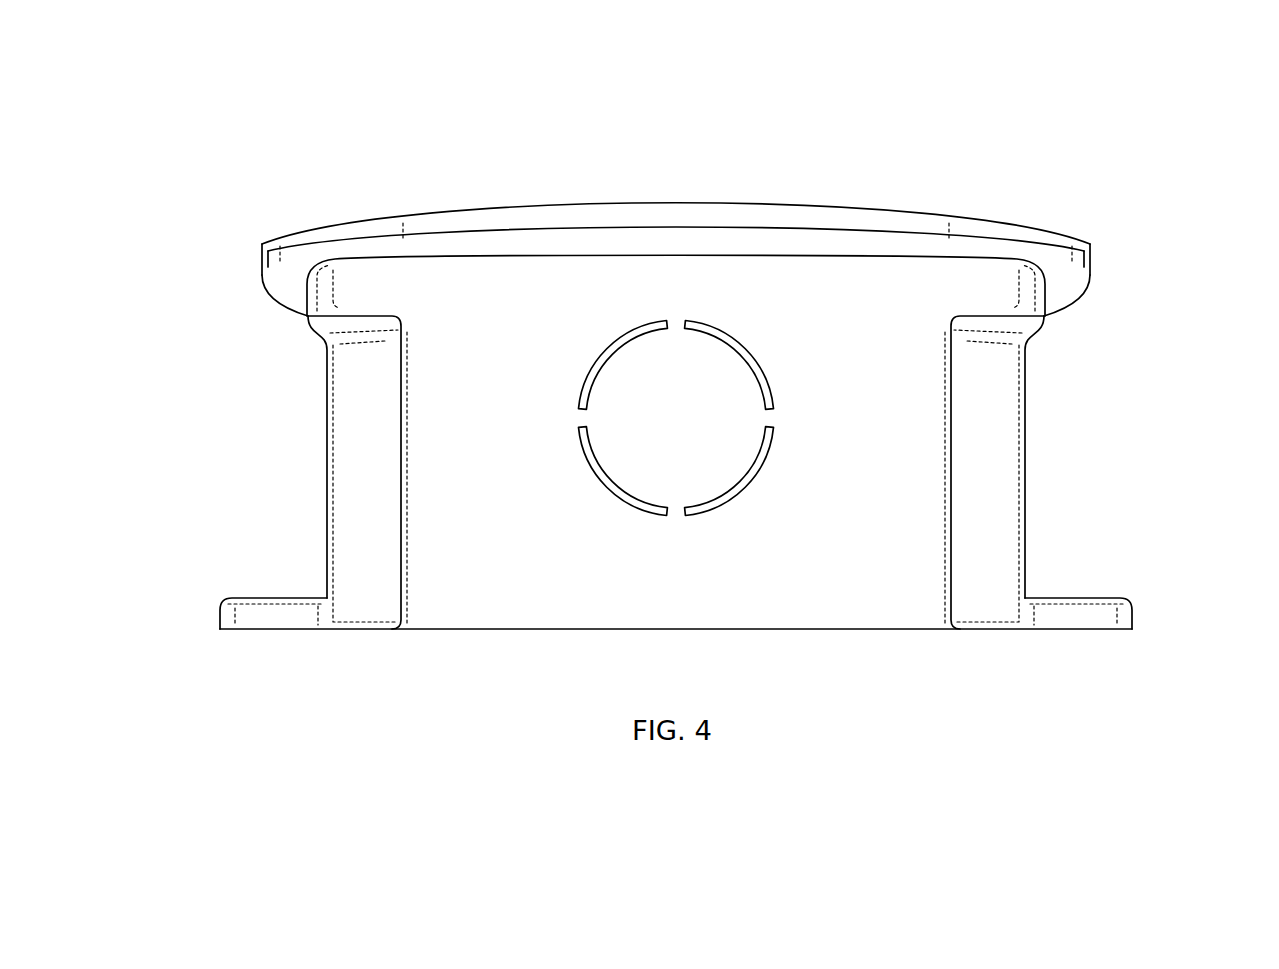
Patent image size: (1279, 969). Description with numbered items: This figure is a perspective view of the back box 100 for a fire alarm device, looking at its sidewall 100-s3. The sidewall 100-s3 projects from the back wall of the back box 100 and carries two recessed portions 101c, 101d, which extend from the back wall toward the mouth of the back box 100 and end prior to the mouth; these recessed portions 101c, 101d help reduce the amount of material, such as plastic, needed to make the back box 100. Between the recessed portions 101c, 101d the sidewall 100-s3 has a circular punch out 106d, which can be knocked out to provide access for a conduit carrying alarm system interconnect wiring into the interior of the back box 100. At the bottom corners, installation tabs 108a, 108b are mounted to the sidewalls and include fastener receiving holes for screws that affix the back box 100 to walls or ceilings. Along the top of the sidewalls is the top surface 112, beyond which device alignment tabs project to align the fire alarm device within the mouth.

The back box 100 is at (328, 93).
The top surface 112 is at (1005, 222).
The punch out 106d is at (632, 328).
The recessed portion 101c is at (362, 388).
The recessed portion 101d is at (990, 388).
The installation tab 108b is at (218, 615).
The installation tab 108a is at (1134, 615).
The sidewall 100-s3 is at (515, 592).